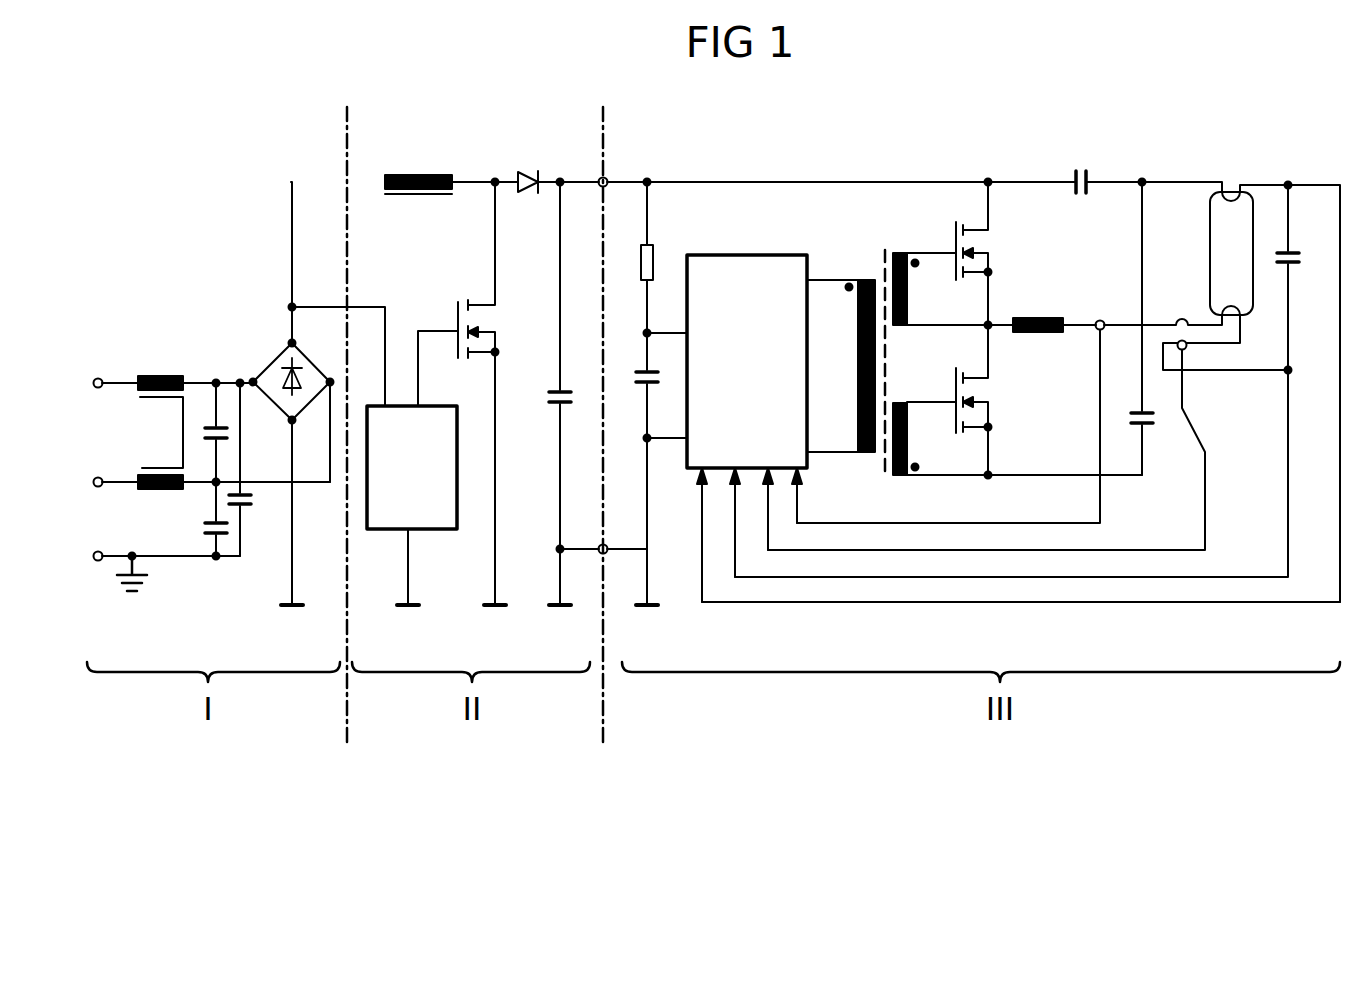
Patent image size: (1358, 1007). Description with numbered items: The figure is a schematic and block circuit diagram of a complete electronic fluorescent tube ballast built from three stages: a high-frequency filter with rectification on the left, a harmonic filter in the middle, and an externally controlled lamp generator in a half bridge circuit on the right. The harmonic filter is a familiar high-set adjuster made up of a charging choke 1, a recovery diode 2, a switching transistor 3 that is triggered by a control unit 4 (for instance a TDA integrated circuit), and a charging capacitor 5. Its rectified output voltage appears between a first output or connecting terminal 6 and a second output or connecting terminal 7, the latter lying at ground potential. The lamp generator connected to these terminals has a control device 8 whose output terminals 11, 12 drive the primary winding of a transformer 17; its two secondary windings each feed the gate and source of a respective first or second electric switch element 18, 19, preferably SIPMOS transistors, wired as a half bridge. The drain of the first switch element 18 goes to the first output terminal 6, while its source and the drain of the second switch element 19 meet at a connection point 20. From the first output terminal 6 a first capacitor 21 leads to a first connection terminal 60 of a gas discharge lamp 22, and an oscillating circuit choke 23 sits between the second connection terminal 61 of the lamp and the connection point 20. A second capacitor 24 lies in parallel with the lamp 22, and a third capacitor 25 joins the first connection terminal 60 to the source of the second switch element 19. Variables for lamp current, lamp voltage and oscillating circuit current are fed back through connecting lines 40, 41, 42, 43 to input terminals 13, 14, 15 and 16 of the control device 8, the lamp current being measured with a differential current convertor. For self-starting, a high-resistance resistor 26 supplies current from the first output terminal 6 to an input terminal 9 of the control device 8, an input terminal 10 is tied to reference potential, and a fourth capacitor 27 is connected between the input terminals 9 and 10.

The charging choke 1 is at (418, 172).
The recovery diode 2 is at (528, 168).
The switching transistor 3 is at (458, 294).
The control unit 4 is at (412, 467).
The charging capacitor 5 is at (570, 393).
The first output or connecting terminal 6 is at (607, 180).
The second output or connecting terminal 7 is at (606, 552).
The control device 8 is at (747, 361).
The input terminal 9 is at (678, 332).
The input terminal 10 is at (687, 437).
The output terminal 11 is at (814, 281).
The output terminal 12 is at (812, 450).
The input terminal 13 is at (703, 521).
The input terminal 14 is at (736, 509).
The input terminal 15 is at (767, 495).
The input terminal 16 is at (796, 482).
The transformer 17 is at (891, 250).
The first electric switch element 18 is at (980, 253).
The second electric switch element 19 is at (979, 400).
The connection point 20 is at (987, 330).
The first capacitor 21 is at (1088, 167).
The gas discharge lamp 22 is at (1231, 253).
The oscillating circuit choke 23 is at (1040, 313).
The second capacitor 24 is at (1305, 277).
The third capacitor 25 is at (1150, 428).
The high-resistance resistor 26 is at (653, 252).
The fourth capacitor 27 is at (640, 378).
The connecting line 40 is at (932, 522).
The connecting line 41 is at (975, 548).
The connecting line 42 is at (998, 580).
The connecting line 43 is at (1055, 605).
The first connection terminal 60 is at (1224, 190).
The second connection terminal 61 is at (1240, 318).